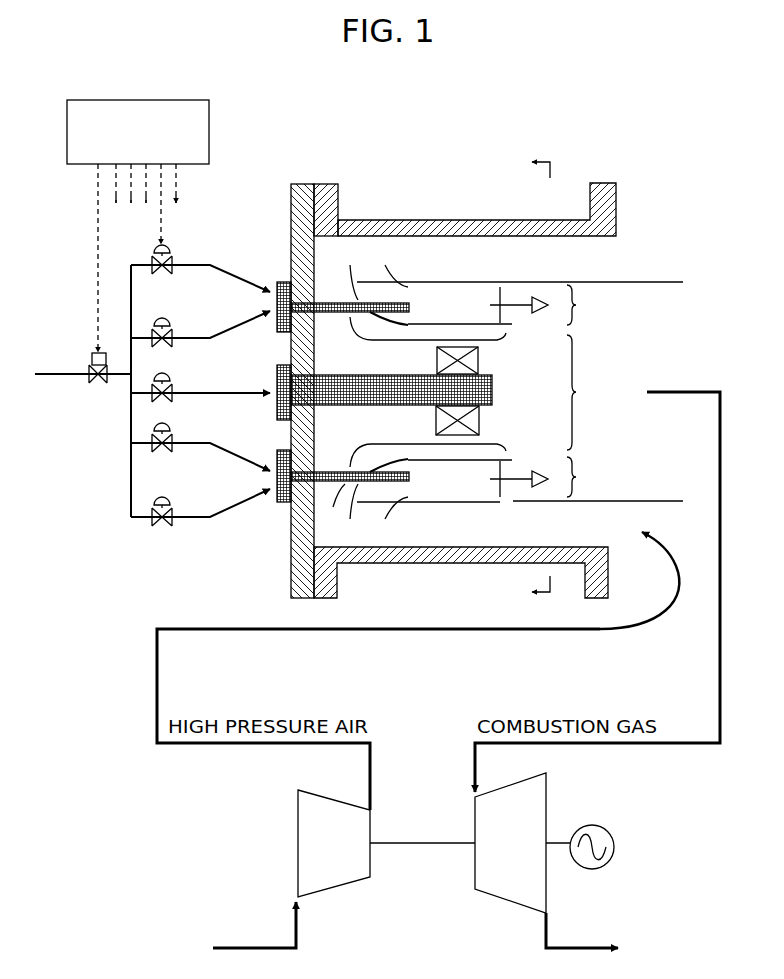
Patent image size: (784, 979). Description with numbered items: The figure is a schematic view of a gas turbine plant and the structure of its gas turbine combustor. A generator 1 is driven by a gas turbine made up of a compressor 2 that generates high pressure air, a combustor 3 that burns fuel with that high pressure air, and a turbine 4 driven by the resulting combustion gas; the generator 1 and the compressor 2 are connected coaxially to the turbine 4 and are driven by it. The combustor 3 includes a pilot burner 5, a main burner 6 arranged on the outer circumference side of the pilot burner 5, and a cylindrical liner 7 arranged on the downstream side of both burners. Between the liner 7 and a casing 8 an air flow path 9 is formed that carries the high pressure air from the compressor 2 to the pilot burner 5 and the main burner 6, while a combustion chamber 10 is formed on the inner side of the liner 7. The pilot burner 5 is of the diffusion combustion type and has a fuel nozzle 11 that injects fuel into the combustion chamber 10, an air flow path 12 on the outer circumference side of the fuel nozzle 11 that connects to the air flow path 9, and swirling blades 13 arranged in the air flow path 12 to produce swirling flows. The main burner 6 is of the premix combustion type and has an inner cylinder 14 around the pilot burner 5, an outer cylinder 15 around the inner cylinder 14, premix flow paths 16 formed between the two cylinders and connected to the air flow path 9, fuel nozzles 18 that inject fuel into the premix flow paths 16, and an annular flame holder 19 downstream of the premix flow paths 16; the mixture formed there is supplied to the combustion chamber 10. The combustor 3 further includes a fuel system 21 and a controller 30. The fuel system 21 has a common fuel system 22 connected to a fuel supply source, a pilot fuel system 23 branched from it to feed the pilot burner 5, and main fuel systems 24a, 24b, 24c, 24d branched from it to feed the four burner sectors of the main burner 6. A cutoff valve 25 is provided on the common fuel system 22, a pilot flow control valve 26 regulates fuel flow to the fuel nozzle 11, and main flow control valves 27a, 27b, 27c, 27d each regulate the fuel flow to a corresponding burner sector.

The generator 1 is at (592, 824).
The compressor 2 is at (327, 856).
The combustor 3 is at (395, 180).
The turbine 4 is at (504, 856).
The pilot burner 5 is at (581, 392).
The main burner 6 is at (581, 391).
The liner 7 is at (648, 279).
The casing 8 is at (485, 219).
The air flow path 9 is at (578, 531).
The combustion chamber 10 is at (657, 481).
The fuel nozzle 11 is at (396, 375).
The air flow path 12 is at (406, 431).
The swirling blades 13 is at (481, 420).
The inner cylinder 14 is at (430, 321).
The outer cylinder 15 is at (463, 287).
The premix flow paths 16 is at (431, 311).
The fuel nozzles 18 is at (345, 300).
The flame holder 19 is at (540, 298).
The fuel system 21 is at (120, 498).
The common fuel system 22 is at (56, 370).
The pilot fuel system 23 is at (218, 389).
The main fuel system 24a is at (242, 279).
The main fuel system 24b is at (242, 330).
The main fuel system 24c is at (242, 459).
The main fuel system 24d is at (242, 511).
The cutoff valve 25 is at (103, 386).
The pilot flow control valve 26 is at (175, 380).
The main flow control valve 27a is at (173, 256).
The main flow control valve 27b is at (173, 326).
The main flow control valve 27c is at (173, 431).
The main flow control valve 27d is at (173, 505).
The controller 30 is at (126, 97).